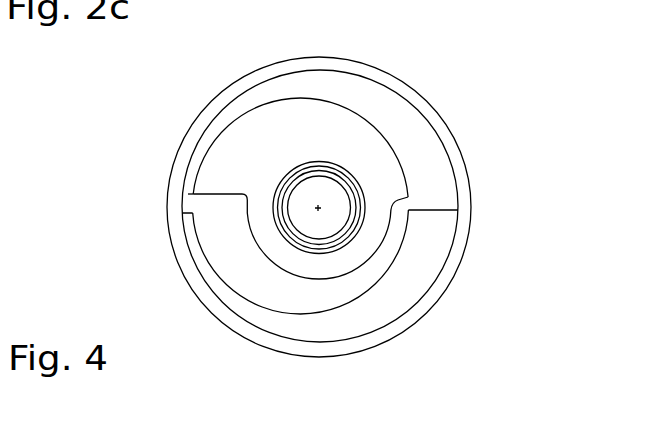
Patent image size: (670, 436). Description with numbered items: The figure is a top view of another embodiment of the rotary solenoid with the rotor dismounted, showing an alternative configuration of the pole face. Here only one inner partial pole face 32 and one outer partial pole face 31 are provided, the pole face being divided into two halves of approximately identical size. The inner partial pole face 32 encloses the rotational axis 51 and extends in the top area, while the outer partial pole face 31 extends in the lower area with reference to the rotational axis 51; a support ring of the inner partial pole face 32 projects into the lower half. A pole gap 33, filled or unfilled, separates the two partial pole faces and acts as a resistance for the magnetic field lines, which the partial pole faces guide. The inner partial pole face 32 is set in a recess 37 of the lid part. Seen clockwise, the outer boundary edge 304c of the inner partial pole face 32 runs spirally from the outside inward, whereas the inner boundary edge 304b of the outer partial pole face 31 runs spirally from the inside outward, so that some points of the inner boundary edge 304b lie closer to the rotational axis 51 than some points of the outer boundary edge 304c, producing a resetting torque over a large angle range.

The outer partial pole face 31 is at (432, 255).
The inner partial pole face 32 is at (383, 160).
The pole gap 33 is at (190, 194).
The recess 37 is at (360, 93).
The rotational axis 51 is at (318, 204).
The inner boundary edge 304b is at (367, 268).
The outer boundary edge 304c is at (303, 97).